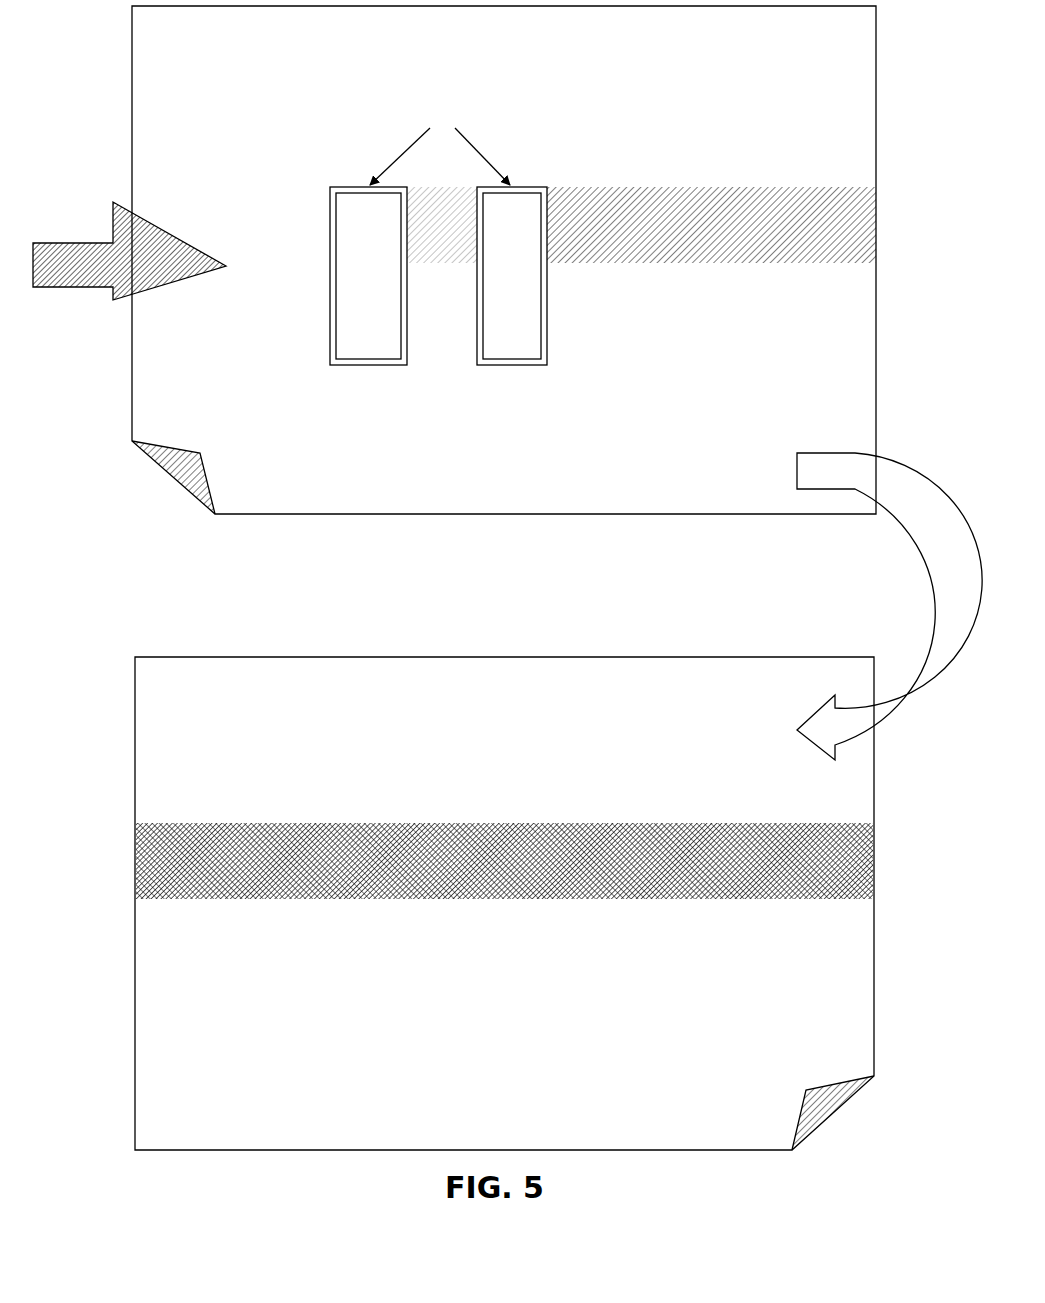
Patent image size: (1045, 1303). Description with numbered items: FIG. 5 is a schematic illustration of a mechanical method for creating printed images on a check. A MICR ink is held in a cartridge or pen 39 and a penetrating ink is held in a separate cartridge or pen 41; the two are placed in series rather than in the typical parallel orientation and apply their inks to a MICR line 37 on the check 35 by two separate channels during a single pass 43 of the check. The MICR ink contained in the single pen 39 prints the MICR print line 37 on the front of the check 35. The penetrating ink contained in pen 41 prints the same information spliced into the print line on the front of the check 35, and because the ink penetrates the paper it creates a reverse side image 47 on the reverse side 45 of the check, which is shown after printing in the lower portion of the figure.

The check 35 is at (878, 97).
The MICR line 37 is at (815, 187).
The MICR ink cartridge or pen 39 is at (517, 186).
The penetrating ink cartridge or pen 41 is at (362, 186).
The single pass 43 is at (80, 243).
The reverse side 45 is at (877, 818).
The reverse side image 47 is at (870, 860).